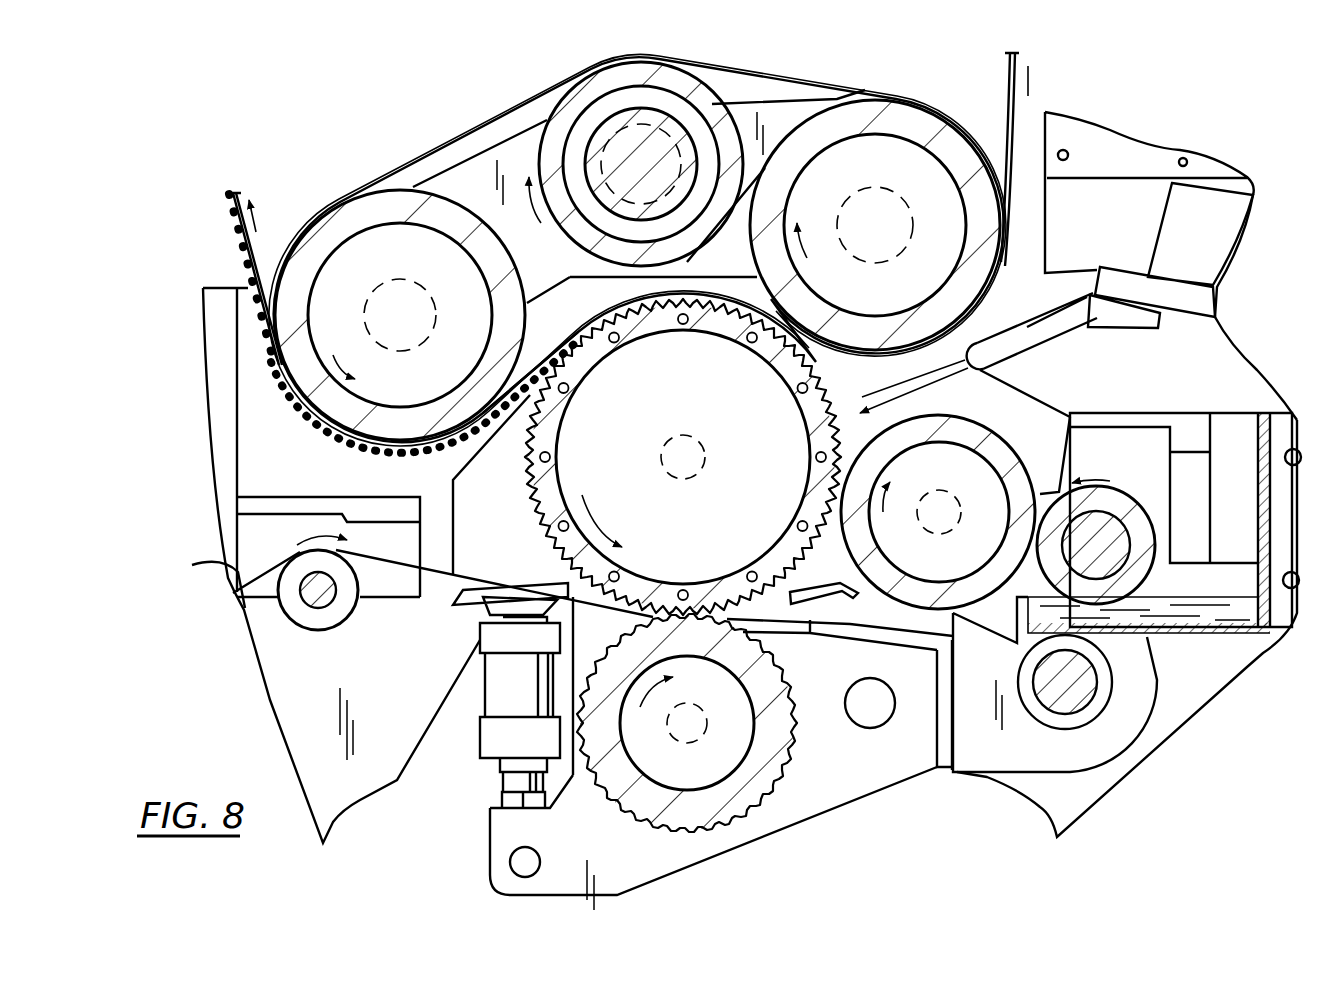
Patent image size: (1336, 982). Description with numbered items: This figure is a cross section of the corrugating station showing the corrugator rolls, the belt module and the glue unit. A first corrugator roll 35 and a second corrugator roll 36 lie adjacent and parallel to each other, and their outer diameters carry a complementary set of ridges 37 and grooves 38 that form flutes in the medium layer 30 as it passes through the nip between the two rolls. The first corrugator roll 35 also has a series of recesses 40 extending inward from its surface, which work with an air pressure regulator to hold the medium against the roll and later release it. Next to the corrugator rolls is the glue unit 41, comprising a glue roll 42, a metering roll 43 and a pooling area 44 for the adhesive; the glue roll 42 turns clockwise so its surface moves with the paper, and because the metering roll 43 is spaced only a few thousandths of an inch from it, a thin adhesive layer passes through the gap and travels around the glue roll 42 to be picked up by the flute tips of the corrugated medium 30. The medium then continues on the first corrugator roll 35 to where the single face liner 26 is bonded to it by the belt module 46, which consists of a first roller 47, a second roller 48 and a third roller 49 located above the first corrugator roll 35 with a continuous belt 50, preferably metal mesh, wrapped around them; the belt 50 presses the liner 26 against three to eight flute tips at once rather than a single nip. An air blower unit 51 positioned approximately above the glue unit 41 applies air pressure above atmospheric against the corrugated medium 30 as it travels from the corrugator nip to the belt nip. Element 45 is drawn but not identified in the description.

The single face liner 26 is at (1010, 78).
The medium layer 30 is at (265, 586).
The first corrugator roll 35 is at (530, 508).
The second corrugator roll 36 is at (747, 817).
The ridges 37 is at (533, 441).
The grooves 38 is at (530, 464).
The recesses 40 is at (655, 457).
The glue unit 41 is at (1203, 636).
The glue roll 42 is at (950, 611).
The metering roll 43 is at (1117, 497).
The pooling area 44 is at (1177, 598).
The transfer roller 45 is at (1048, 492).
The belt module 46 is at (637, 250).
The first roller 47 is at (385, 200).
The second roller 48 is at (748, 85).
The third roller 49 is at (872, 130).
The continuous belt 50 is at (545, 107).
The air blower unit 51 is at (1033, 350).